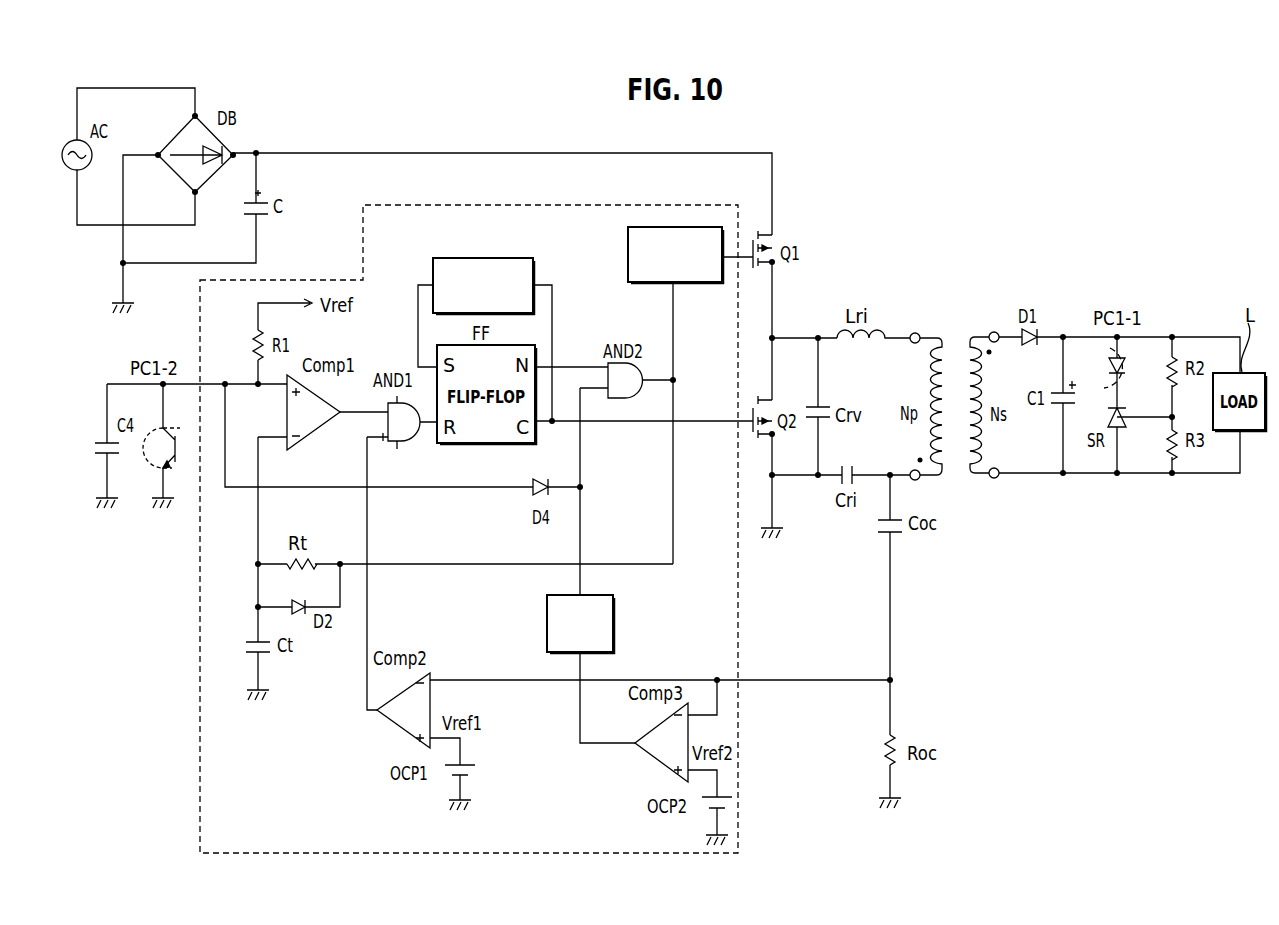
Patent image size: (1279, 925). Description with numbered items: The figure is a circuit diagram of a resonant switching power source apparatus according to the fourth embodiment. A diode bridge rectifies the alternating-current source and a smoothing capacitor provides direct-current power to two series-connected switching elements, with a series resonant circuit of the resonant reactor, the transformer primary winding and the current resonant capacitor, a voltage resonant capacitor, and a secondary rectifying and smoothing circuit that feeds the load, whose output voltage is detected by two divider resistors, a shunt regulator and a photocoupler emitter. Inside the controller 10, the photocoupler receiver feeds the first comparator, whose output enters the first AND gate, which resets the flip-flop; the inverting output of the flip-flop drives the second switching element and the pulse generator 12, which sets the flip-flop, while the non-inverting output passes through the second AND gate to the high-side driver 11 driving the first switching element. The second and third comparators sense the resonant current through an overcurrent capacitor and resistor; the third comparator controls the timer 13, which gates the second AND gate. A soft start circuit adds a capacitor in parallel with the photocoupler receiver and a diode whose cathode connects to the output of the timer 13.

The controller 10 is at (382, 205).
The high-side driver 11 is at (628, 258).
The pulse generator 12 is at (503, 258).
The timer 13 is at (547, 623).